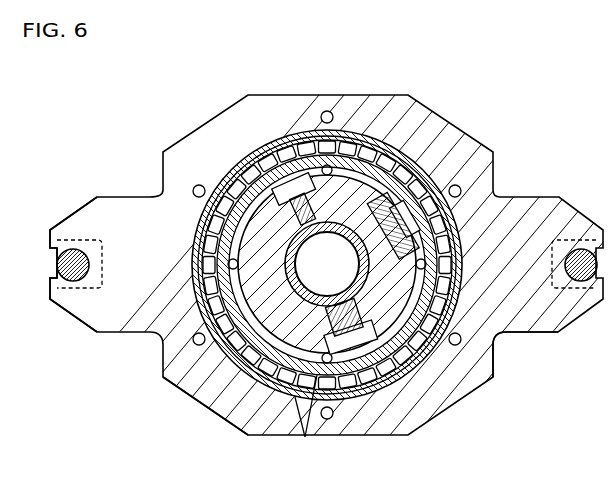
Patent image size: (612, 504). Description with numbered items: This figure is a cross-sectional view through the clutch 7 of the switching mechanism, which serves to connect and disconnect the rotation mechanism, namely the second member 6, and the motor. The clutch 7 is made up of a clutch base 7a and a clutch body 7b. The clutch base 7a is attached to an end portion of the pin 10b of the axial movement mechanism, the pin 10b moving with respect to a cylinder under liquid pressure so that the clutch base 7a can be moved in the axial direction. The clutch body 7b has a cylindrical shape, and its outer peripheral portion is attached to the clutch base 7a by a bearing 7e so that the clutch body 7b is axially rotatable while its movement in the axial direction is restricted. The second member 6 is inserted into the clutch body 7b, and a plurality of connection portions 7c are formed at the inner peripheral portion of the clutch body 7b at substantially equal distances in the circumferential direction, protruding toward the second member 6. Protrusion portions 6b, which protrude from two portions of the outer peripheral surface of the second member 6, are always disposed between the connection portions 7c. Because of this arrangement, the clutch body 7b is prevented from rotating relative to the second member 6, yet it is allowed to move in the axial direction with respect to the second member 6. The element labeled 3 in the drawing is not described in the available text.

The rotor 3 is at (356, 216).
The second member 6 is at (266, 210).
The protrusion portions 6b is at (309, 130).
The clutch 7 is at (116, 196).
The clutch base 7a is at (107, 232).
The clutch body 7b is at (449, 317).
The connection portions 7c is at (305, 437).
The bearing 7e is at (206, 403).
The pin 10b is at (70, 283).